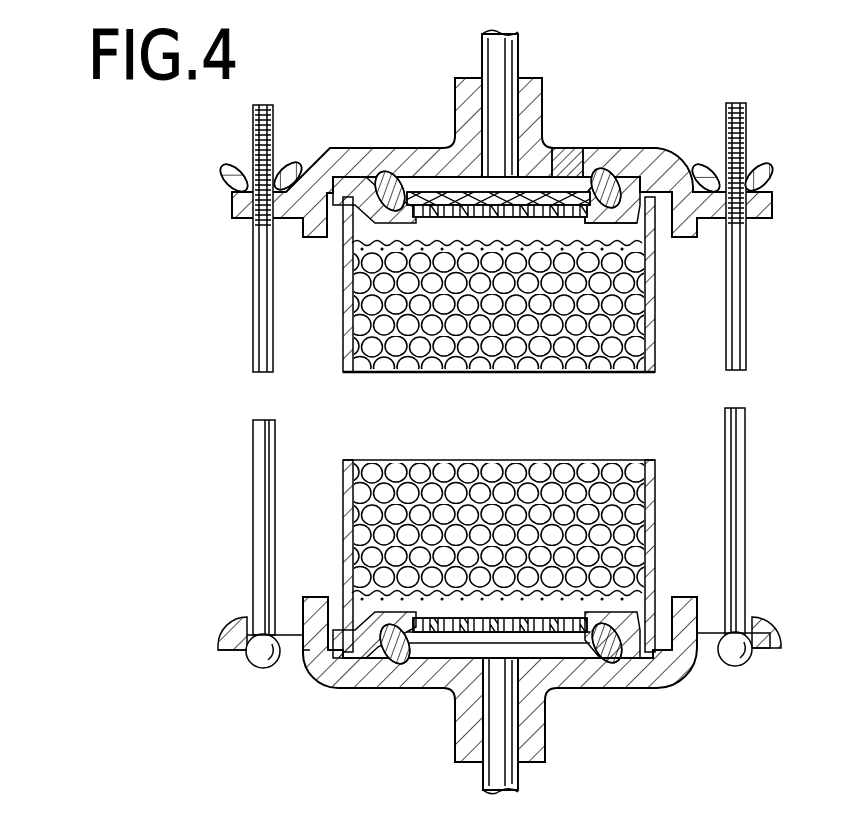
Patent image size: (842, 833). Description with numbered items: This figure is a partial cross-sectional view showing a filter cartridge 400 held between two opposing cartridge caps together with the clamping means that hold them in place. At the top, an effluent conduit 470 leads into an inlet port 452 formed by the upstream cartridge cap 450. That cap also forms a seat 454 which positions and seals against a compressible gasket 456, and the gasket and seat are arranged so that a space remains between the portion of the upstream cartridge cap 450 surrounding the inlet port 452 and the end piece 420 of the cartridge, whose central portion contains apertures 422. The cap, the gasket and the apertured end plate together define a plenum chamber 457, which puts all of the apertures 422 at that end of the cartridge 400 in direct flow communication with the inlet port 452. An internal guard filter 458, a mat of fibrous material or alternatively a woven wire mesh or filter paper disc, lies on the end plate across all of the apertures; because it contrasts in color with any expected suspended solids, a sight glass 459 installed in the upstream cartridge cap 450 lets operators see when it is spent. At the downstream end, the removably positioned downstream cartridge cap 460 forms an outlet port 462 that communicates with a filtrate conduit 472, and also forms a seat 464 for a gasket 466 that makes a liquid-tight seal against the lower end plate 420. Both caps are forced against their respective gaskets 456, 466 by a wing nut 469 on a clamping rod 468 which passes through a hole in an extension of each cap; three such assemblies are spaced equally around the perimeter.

The cartridge 400 is at (343, 493).
The end piece 420 is at (410, 175).
The apertures 422 is at (453, 192).
The upstream cartridge cap 450 is at (330, 147).
The inlet port 452 is at (490, 130).
The seat 454 is at (598, 170).
The compressible gasket 456 is at (622, 178).
The plenum chamber 457 is at (560, 193).
The internal guard filter 458 is at (487, 205).
The sight glass 459 is at (570, 148).
The downstream cartridge cap 460 is at (643, 688).
The outlet port 462 is at (513, 718).
The seat 464 is at (396, 664).
The gasket 466 is at (365, 662).
The clamping rod 468 is at (253, 313).
The wing nut 469 is at (223, 186).
The effluent conduit 470 is at (518, 48).
The filtrate conduit 472 is at (520, 786).